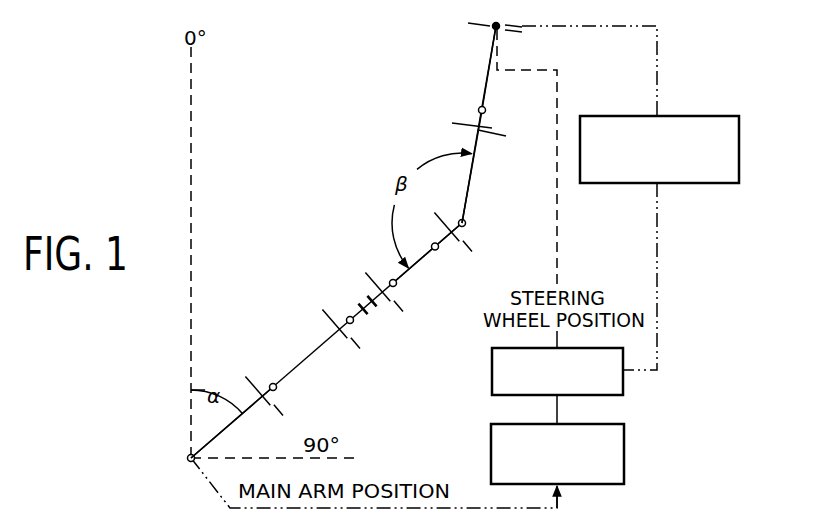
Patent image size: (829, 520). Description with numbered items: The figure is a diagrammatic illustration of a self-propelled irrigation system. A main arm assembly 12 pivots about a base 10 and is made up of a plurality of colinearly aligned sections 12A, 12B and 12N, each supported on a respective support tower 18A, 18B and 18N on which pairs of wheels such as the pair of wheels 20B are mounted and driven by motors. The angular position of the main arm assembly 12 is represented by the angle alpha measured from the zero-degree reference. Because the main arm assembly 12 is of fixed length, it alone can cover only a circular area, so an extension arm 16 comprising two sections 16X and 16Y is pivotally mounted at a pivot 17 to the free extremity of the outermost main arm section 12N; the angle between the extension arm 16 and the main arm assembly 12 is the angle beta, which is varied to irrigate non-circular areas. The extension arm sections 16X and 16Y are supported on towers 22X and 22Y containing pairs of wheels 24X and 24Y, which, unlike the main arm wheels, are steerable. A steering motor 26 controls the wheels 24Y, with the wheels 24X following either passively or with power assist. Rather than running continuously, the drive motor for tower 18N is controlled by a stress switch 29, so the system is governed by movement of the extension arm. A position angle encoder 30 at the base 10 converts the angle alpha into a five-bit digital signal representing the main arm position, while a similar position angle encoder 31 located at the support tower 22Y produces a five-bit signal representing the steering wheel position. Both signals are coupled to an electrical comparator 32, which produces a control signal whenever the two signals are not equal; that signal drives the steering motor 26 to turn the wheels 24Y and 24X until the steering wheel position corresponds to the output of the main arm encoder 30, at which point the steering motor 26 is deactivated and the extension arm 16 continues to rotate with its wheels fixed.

The base 10 is at (187, 459).
The main arm assembly 12 is at (388, 332).
The main arm section 12A is at (224, 428).
The main arm section 12B is at (285, 376).
The main arm section 12N is at (416, 268).
The extension arm 16 is at (446, 78).
The extension arm section 16X is at (474, 178).
The extension arm section 16Y is at (487, 83).
The pivot 17 is at (467, 222).
The support tower 18A is at (261, 382).
The support tower 18B is at (333, 316).
The support tower 18N is at (466, 241).
The pair of wheels 20B is at (328, 318).
The support tower 22X is at (476, 126).
The support tower 22Y is at (508, 28).
The pair of wheels 24X is at (460, 130).
The pair of wheels 24Y is at (509, 33).
The steering motor 26 is at (489, 30).
The stress switch 29 is at (428, 244).
The position angle encoder 30 is at (625, 441).
The position angle encoder 31 is at (694, 116).
The electrical comparator 32 is at (492, 370).